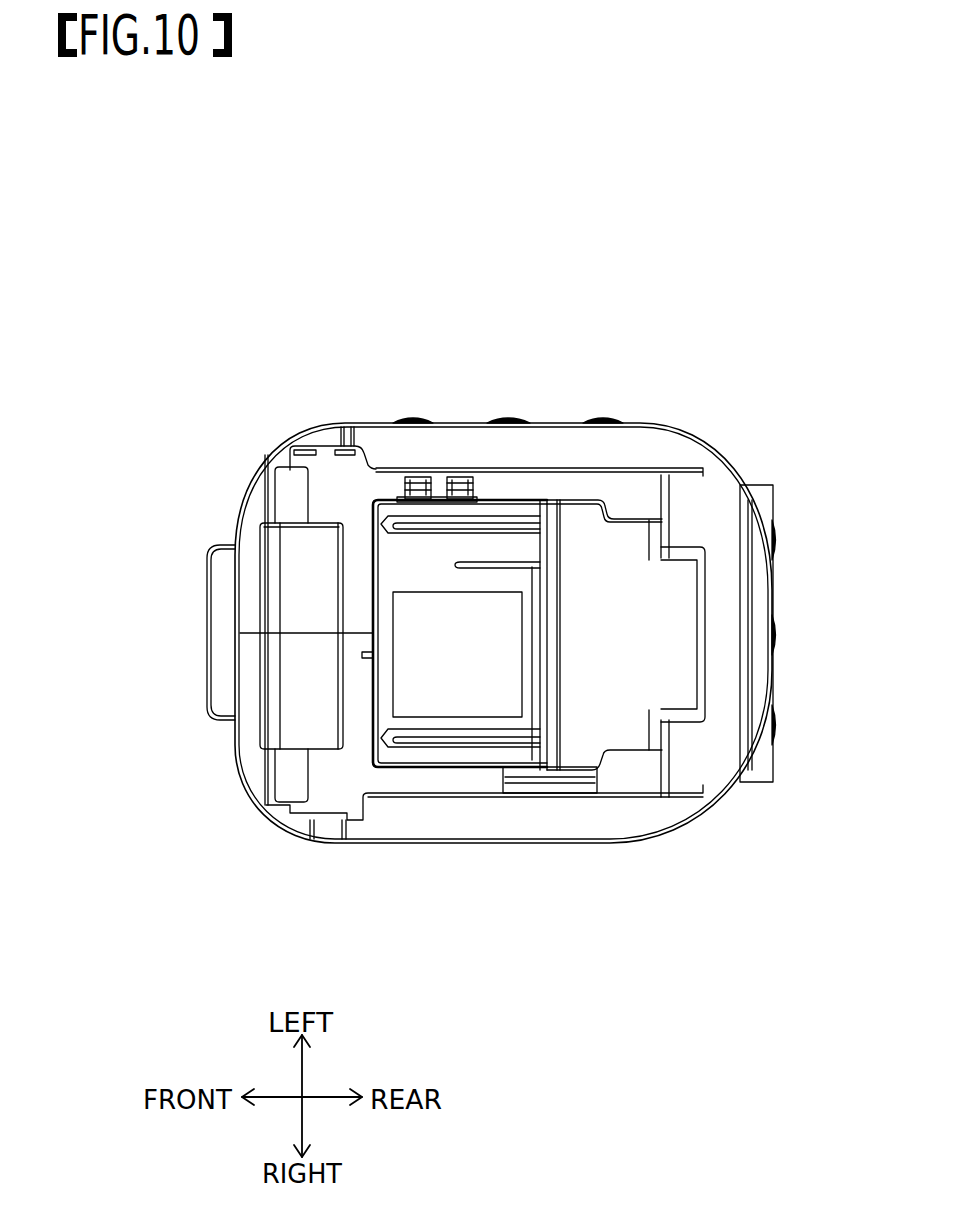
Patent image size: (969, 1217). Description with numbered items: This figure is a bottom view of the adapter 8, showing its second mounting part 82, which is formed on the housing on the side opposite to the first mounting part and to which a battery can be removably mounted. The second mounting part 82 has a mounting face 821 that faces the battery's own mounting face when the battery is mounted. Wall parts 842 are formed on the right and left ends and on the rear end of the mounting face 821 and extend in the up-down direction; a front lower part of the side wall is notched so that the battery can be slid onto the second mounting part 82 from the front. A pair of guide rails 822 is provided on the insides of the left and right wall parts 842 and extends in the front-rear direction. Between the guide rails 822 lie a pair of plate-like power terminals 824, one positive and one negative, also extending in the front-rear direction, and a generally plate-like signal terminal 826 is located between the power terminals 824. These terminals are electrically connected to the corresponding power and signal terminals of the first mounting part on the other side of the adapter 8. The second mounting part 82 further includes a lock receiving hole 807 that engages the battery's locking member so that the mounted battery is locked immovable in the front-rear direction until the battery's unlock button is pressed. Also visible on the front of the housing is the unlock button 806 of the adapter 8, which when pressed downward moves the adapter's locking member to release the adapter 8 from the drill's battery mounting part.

The adapter 8 is at (498, 608).
The second mounting part 82 is at (688, 407).
The unlock button 806 is at (212, 712).
The lock receiving hole 807 is at (290, 643).
The mounting face 821 is at (560, 632).
The guide rails 822 is at (522, 472).
The power terminals 824 is at (450, 526).
The signal terminal 826 is at (477, 557).
The wall parts 842 is at (640, 432).